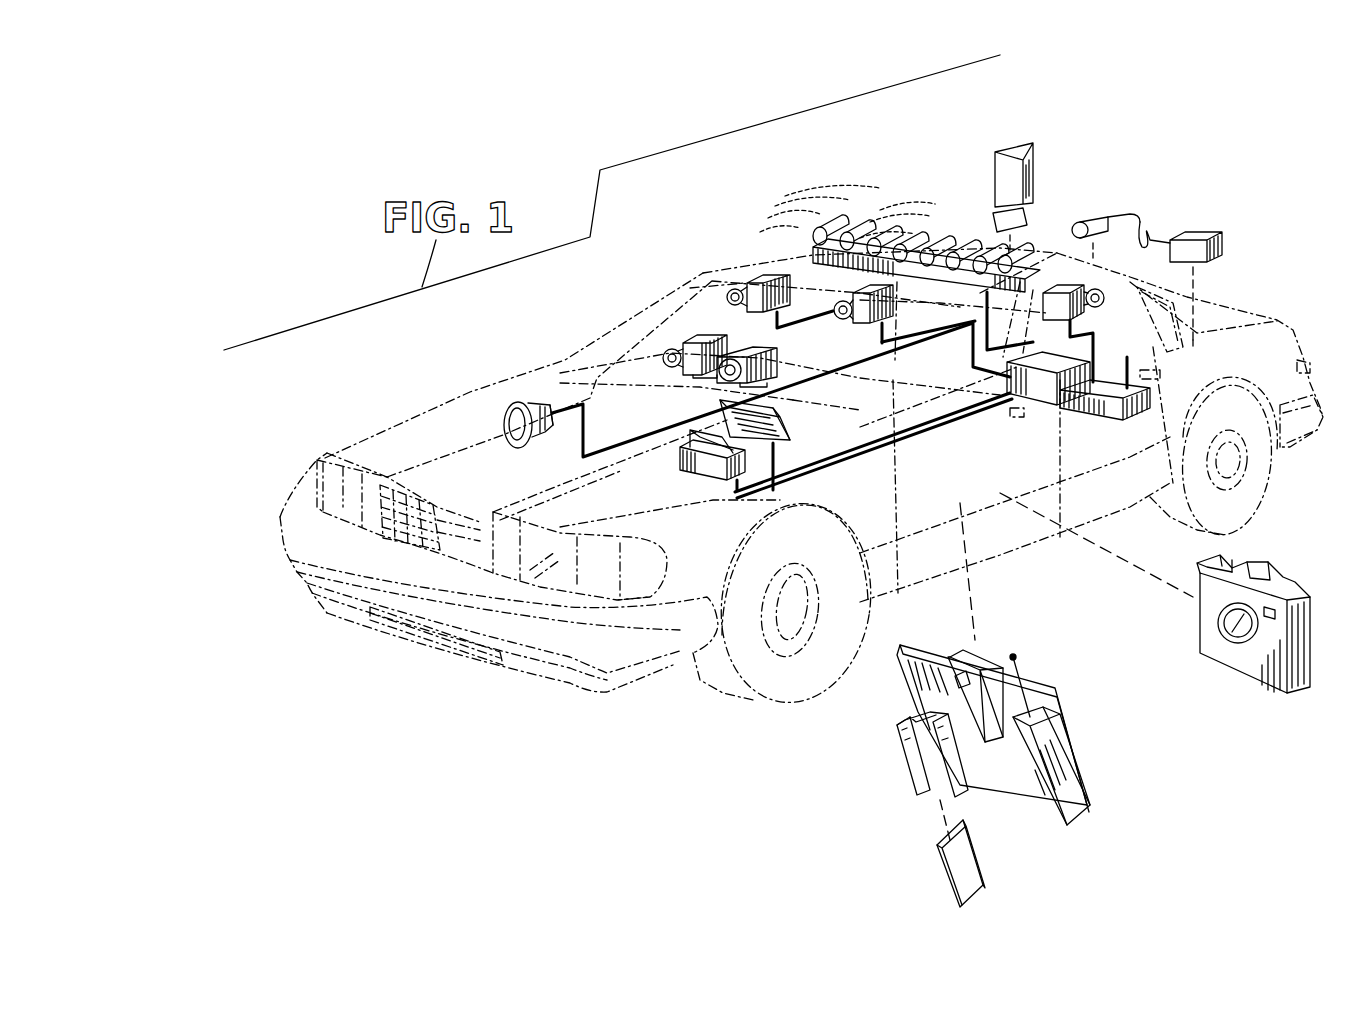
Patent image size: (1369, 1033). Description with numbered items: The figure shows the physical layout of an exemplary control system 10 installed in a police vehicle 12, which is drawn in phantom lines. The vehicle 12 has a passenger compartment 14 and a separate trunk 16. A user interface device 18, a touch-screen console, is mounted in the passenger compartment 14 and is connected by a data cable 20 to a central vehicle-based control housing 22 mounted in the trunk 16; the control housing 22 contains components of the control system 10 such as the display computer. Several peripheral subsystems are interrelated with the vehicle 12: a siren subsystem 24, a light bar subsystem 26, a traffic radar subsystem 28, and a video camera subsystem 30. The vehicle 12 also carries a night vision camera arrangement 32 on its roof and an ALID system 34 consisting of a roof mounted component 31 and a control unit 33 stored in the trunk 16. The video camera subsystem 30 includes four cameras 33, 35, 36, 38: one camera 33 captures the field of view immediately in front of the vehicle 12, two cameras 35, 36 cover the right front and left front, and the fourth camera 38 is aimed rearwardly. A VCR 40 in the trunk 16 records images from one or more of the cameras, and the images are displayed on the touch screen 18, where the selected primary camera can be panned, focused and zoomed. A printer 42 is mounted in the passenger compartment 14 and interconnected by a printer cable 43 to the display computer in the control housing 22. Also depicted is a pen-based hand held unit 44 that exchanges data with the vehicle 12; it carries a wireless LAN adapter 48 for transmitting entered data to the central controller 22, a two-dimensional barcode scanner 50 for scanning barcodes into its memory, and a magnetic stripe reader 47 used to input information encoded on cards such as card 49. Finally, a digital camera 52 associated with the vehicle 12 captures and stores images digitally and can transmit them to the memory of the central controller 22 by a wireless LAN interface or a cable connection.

The control system 10 is at (1127, 158).
The police vehicle 12 is at (377, 430).
The passenger compartment 14 is at (848, 406).
The trunk 16 is at (1133, 353).
The user interface device 18 is at (788, 430).
The data cable 20 is at (915, 440).
The central vehicle-based control housing 22 is at (1060, 418).
The siren subsystem 24 is at (530, 395).
The light bar subsystem 26 is at (830, 218).
The traffic radar subsystem 28 is at (710, 387).
The video camera subsystem 30 is at (670, 346).
The roof mounted component 31 is at (515, 405).
The night vision camera arrangement 32 is at (1025, 150).
The camera 33 is at (697, 342).
The ALID system 34 is at (1150, 228).
The camera 35 is at (735, 290).
The camera 36 is at (862, 327).
The camera 38 is at (1052, 290).
The VCR 40 is at (1147, 400).
The printer 42 is at (690, 470).
The printer cable 43 is at (732, 487).
The hand held unit 44 is at (1055, 690).
The magnetic stripe reader 47 is at (908, 780).
The wireless LAN adapter 48 is at (1057, 780).
The card 49 is at (947, 852).
The two-dimensional barcode scanner 50 is at (962, 672).
The digital camera 52 is at (1280, 645).